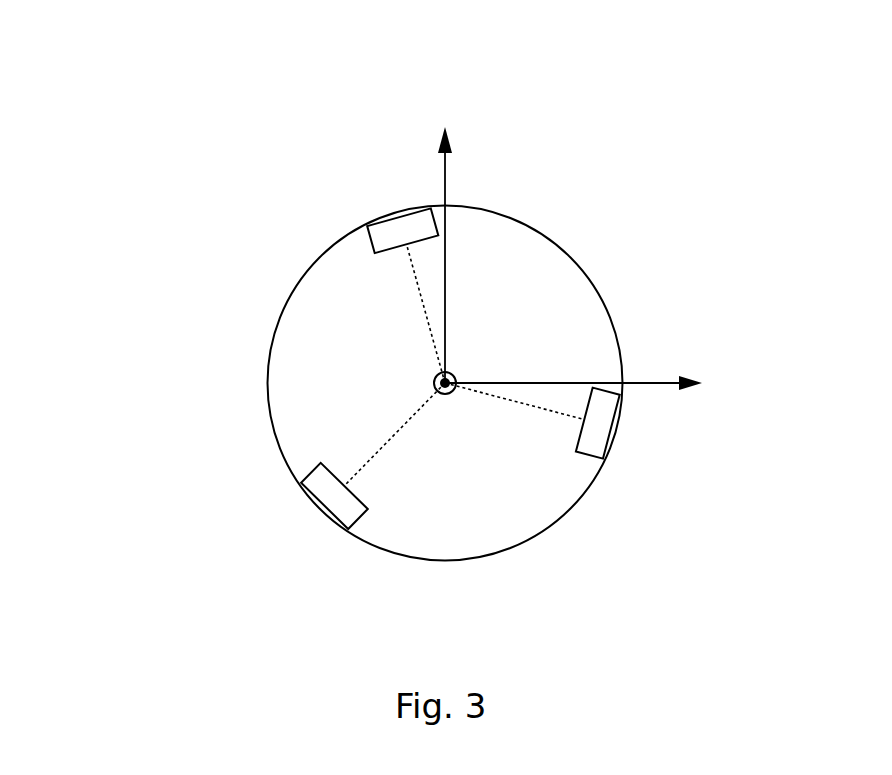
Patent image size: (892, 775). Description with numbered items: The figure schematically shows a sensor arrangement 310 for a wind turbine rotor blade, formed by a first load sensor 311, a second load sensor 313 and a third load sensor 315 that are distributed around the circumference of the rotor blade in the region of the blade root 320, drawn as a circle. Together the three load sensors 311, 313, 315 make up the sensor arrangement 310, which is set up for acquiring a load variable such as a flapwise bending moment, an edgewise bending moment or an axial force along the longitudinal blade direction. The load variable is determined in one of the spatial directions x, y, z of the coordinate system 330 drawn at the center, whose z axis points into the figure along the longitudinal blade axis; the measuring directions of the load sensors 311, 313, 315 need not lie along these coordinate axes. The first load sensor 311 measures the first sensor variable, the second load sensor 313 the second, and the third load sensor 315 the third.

The sensor arrangement 310 is at (246, 107).
The first load sensor 311 is at (385, 235).
The second load sensor 313 is at (598, 434).
The third load sensor 315 is at (335, 498).
The blade root 320 is at (600, 263).
The robot coordinate system 330 is at (462, 161).